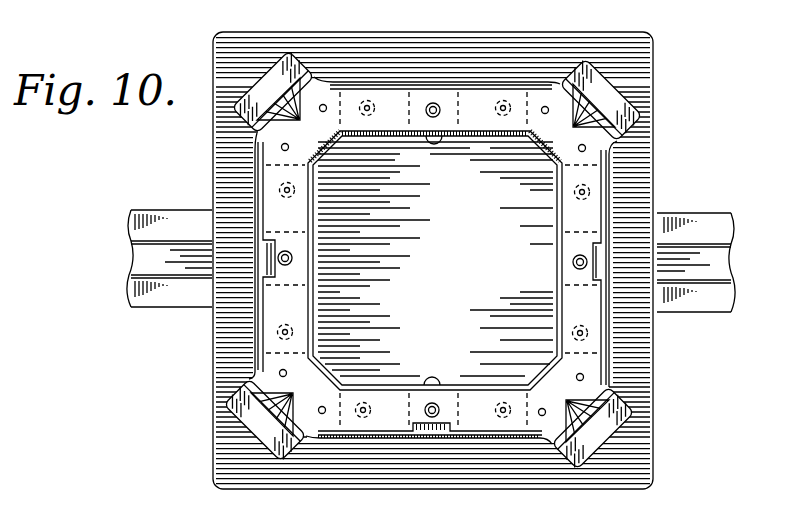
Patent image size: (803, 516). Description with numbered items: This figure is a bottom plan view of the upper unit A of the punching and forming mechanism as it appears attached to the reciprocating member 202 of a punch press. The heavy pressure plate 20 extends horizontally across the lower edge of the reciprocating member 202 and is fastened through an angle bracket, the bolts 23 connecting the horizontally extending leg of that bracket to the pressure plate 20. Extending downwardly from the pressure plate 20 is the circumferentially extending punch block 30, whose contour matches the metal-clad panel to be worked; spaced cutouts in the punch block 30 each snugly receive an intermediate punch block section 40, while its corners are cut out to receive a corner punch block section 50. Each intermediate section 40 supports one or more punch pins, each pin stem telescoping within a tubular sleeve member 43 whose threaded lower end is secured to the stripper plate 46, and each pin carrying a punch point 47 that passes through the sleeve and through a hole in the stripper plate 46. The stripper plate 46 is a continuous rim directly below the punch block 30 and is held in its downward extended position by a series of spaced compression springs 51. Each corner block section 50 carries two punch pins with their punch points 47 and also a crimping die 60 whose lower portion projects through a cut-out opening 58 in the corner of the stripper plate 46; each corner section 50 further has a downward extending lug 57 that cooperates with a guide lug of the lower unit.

The pressure plate 20 is at (453, 36).
The bolts 23 is at (436, 152).
The punch block 30 is at (617, 226).
The intermediate punch block section 40 is at (447, 86).
The tubular sleeve member 43 is at (430, 116).
The stripper plate 46 is at (482, 98).
The punch point 47 is at (324, 112).
The corner punch block section 50 is at (298, 56).
The compression spring 51 is at (368, 100).
The downward extending lug 57 is at (263, 78).
The cut-out opening 58 is at (301, 90).
The crimping die 60 is at (262, 134).
The reciprocating member 202 is at (169, 212).
The upper unit A is at (667, 99).